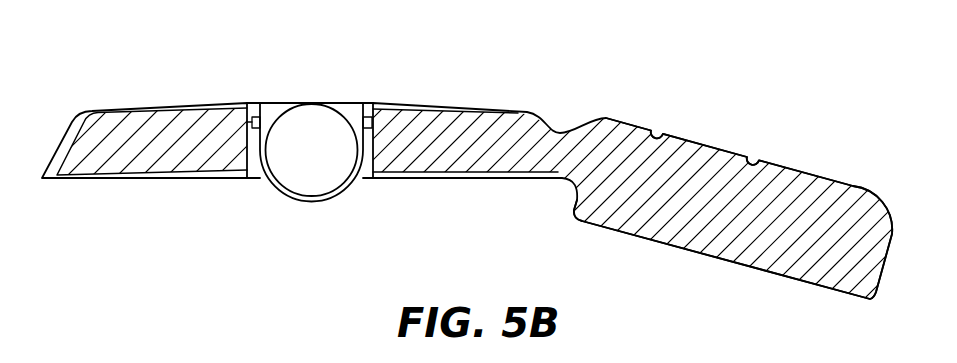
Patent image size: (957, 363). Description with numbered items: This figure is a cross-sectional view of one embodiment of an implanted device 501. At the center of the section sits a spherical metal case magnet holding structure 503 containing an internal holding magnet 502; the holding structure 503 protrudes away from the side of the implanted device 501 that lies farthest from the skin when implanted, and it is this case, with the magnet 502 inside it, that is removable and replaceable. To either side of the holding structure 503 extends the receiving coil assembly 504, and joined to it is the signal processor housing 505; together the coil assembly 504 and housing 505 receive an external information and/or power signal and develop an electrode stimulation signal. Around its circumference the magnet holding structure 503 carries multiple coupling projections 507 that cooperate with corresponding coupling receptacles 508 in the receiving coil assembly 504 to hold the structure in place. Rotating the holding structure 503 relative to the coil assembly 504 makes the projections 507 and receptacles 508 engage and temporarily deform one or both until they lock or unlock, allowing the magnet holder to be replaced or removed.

The implanted device 501 is at (672, 78).
The internal holding magnet 502 is at (298, 173).
The magnet holding structure 503 is at (273, 108).
The receiving coil assembly 504 is at (480, 160).
The signal processor housing 505 is at (828, 205).
The coupling projections 507 is at (362, 120).
The coupling receptacles 508 is at (367, 120).